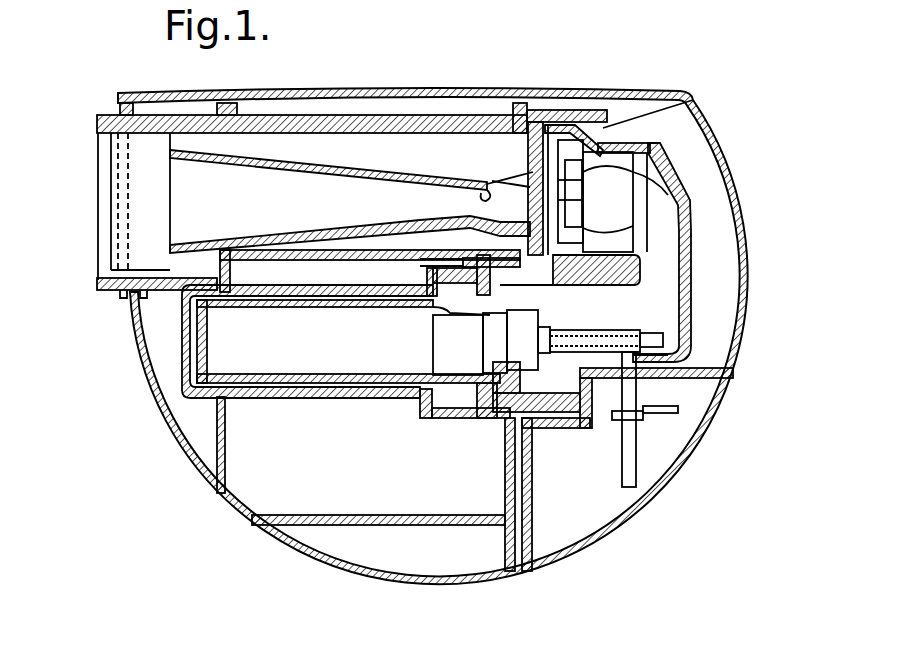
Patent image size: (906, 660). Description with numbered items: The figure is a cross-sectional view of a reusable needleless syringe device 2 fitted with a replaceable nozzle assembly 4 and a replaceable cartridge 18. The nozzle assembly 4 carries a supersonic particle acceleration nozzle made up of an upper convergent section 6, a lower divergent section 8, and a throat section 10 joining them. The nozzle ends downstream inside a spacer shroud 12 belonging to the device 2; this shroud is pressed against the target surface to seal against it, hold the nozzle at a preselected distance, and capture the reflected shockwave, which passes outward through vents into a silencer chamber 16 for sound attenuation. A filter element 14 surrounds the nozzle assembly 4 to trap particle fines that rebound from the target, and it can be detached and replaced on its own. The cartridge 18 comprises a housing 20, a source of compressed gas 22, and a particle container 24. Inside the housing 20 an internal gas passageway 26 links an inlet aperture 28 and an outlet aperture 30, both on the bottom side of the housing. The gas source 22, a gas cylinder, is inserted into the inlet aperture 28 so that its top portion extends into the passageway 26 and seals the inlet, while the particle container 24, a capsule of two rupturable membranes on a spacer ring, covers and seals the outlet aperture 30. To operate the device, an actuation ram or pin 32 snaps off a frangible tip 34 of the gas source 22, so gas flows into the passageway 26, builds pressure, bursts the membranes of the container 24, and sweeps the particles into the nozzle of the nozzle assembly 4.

The reusable device 2 is at (131, 407).
The nozzle assembly 4 is at (358, 164).
The upper convergent section 6 is at (515, 190).
The lower divergent section 8 is at (283, 177).
The throat section 10 is at (485, 198).
The spacer shroud 12 is at (100, 133).
The filter element 14 is at (247, 134).
The silencer chamber 16 is at (253, 482).
The replaceable cartridge 18 is at (702, 212).
The housing 20 is at (655, 140).
The source of compressed gas 22 is at (295, 357).
The particle container 24 is at (597, 143).
The internal gas passageway 26 is at (695, 273).
The inlet aperture 28 is at (527, 362).
The outlet aperture 30 is at (647, 175).
The actuation ram or pin 32 is at (630, 463).
The frangible tip 34 is at (677, 320).